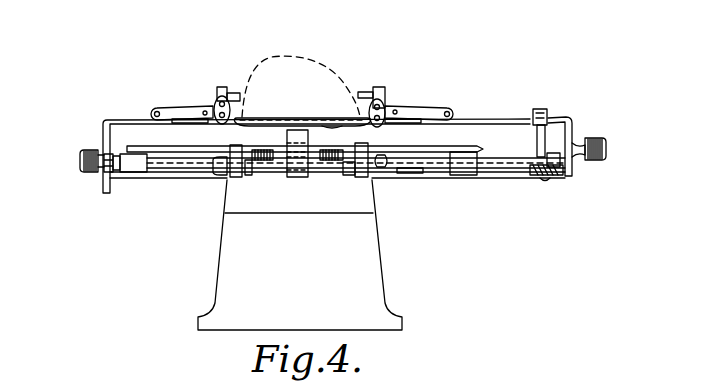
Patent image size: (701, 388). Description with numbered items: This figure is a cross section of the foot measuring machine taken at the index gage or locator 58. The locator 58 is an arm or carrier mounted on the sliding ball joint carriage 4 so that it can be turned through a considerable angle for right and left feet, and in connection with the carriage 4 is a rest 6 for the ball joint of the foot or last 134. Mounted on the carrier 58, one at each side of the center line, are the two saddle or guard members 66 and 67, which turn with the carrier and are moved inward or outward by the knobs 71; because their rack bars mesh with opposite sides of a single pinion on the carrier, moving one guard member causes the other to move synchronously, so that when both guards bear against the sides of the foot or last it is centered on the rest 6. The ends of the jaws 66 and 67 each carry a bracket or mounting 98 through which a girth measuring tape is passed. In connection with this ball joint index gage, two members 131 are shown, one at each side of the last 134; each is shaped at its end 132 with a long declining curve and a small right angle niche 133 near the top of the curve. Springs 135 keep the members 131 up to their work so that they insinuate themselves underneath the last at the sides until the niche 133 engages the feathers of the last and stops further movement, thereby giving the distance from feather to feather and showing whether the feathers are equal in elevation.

The ball joint carriage 4 is at (449, 148).
The rest 6 is at (332, 120).
The index gage or locator 58 is at (470, 172).
The saddle or guard member 66 is at (123, 119).
The saddle or guard member 67 is at (572, 123).
The knob 71 is at (90, 170).
The bracket or mounting 98 is at (226, 87).
The member 131 is at (181, 106).
The end with long declining curve 132 is at (350, 118).
The right angle niche 133 is at (358, 117).
The last 134 is at (317, 72).
The spring 135 is at (205, 121).